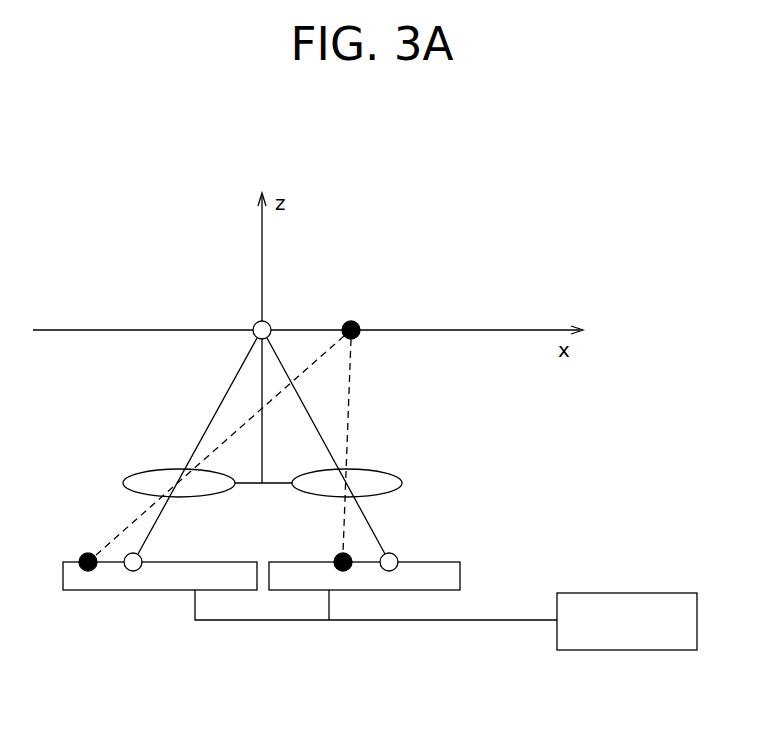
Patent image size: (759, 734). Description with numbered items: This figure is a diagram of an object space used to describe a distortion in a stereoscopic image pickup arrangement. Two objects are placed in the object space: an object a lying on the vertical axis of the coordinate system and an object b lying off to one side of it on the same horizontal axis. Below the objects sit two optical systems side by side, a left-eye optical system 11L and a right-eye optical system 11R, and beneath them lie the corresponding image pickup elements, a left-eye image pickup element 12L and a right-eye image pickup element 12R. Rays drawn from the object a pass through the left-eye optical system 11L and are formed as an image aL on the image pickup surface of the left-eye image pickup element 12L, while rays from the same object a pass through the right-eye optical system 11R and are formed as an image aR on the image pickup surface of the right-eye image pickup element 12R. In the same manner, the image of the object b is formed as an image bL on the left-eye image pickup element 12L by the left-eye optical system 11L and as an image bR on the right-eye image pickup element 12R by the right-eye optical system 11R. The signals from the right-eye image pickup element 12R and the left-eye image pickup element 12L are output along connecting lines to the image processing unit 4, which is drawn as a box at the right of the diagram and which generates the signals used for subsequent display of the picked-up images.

The object a is at (258, 322).
The object b is at (345, 322).
The left-eye optical system 11L is at (148, 471).
The right-eye optical system 11R is at (374, 471).
The left-eye image pickup element 12L is at (155, 590).
The right-eye image pickup element 12R is at (417, 590).
The image aL is at (142, 560).
The image aR is at (398, 560).
The image bL is at (86, 571).
The image bR is at (340, 571).
The image processing unit 4 is at (658, 593).